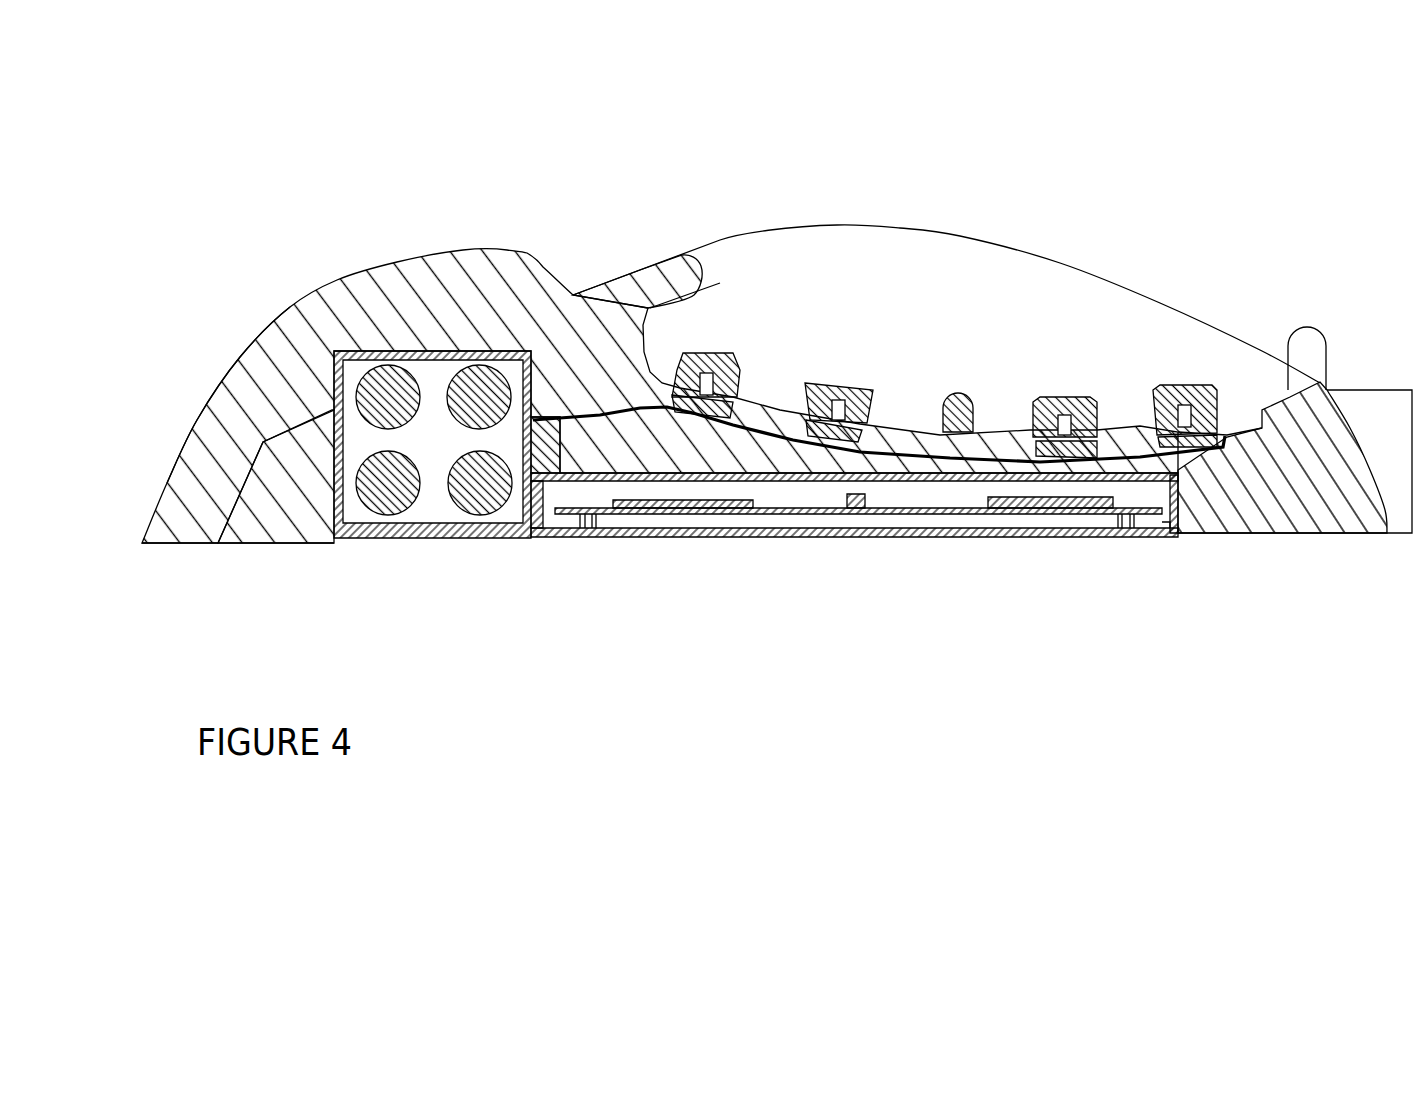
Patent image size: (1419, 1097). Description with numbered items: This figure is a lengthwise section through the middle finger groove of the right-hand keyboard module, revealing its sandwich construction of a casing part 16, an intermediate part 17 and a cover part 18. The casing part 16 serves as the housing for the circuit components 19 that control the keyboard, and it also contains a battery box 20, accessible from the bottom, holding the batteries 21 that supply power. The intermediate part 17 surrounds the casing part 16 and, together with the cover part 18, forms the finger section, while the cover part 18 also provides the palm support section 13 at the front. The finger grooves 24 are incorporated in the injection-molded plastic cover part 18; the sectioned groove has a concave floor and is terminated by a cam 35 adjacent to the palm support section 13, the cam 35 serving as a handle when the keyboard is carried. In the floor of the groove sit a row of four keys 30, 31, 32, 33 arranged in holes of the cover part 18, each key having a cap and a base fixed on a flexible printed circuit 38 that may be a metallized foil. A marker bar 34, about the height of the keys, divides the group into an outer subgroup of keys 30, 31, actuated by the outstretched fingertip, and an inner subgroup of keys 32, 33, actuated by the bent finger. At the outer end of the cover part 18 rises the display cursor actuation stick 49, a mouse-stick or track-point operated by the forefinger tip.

The palm support section 13 is at (338, 280).
The casing part 16 is at (972, 481).
The intermediate part 17 is at (257, 528).
The cover part 18 is at (215, 430).
The circuit components 19 is at (683, 514).
The battery box 20 is at (437, 502).
The batteries 21 is at (390, 492).
The finger grooves 24 is at (1113, 315).
The key 30 is at (1191, 386).
The key 31 is at (1068, 397).
The key 32 is at (843, 383).
The key 33 is at (733, 360).
The marker bar 34 is at (957, 392).
The cam 35 is at (687, 277).
The flexible printed circuit 38 is at (593, 417).
The display cursor actuation stick 49 is at (1310, 327).